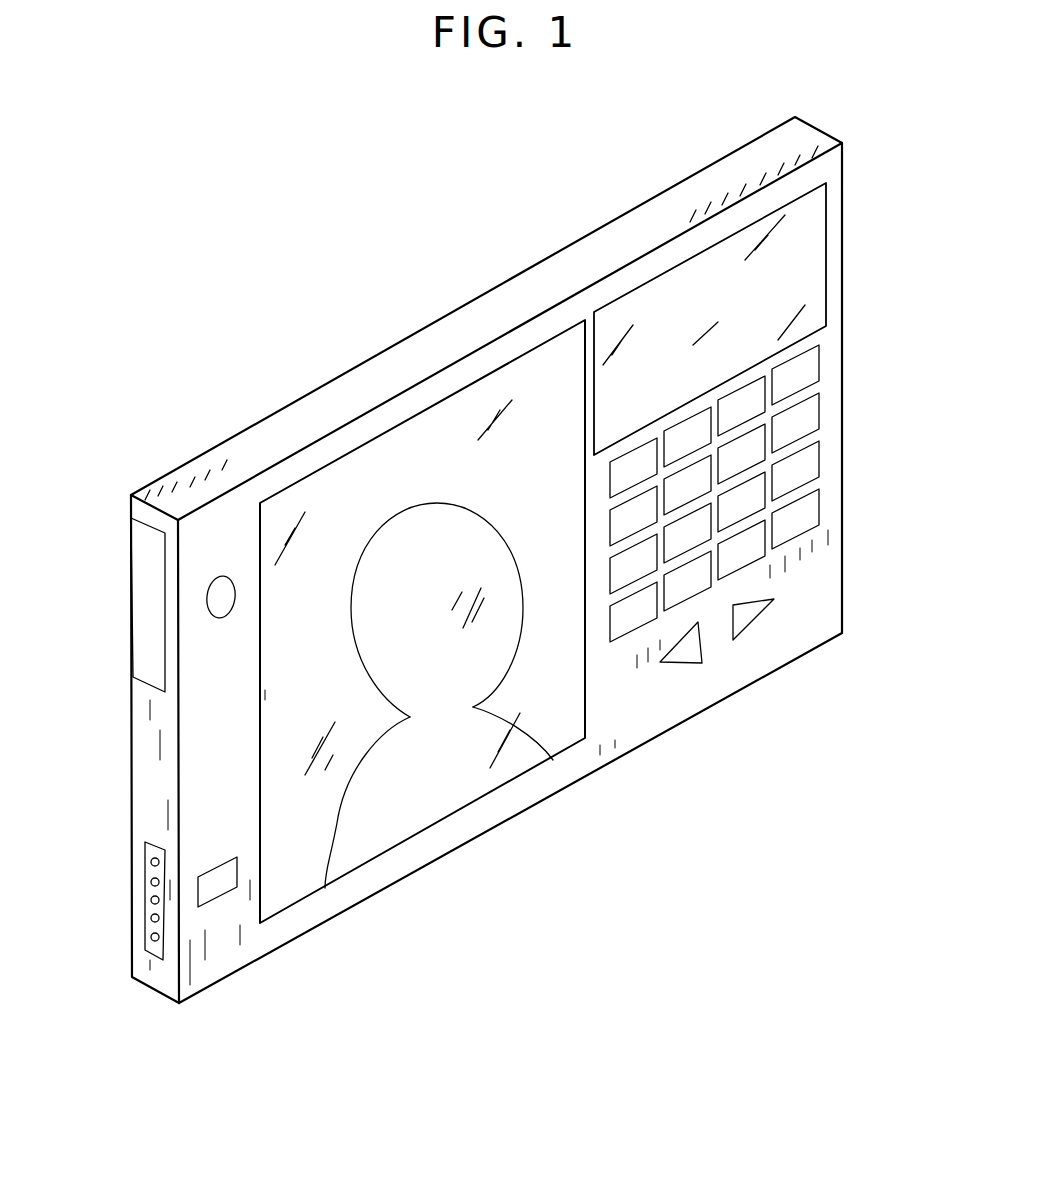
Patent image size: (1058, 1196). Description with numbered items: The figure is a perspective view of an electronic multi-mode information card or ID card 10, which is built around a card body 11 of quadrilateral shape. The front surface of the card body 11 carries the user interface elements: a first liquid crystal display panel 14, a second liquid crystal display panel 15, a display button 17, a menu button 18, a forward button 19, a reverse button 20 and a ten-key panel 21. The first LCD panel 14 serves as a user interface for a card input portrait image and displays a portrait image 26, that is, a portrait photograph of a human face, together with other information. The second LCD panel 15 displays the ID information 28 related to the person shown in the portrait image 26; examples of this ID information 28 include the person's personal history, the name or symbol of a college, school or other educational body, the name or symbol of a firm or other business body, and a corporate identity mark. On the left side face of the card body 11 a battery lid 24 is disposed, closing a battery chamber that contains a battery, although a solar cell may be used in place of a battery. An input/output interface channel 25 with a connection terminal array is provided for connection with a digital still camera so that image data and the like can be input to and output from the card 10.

The electronic multi-mode information card 10 is at (474, 292).
The card body 11 is at (843, 597).
The first liquid crystal display panel 14 is at (455, 803).
The second liquid crystal display panel 15 is at (822, 267).
The display button 17 is at (220, 588).
The menu button 18 is at (217, 887).
The forward button 19 is at (747, 613).
The reverse button 20 is at (688, 650).
The ten-key panel 21 is at (767, 483).
The battery lid 24 is at (147, 614).
The input/output interface channel 25 is at (148, 885).
The portrait image 26 is at (380, 842).
The ID information 28 is at (783, 232).